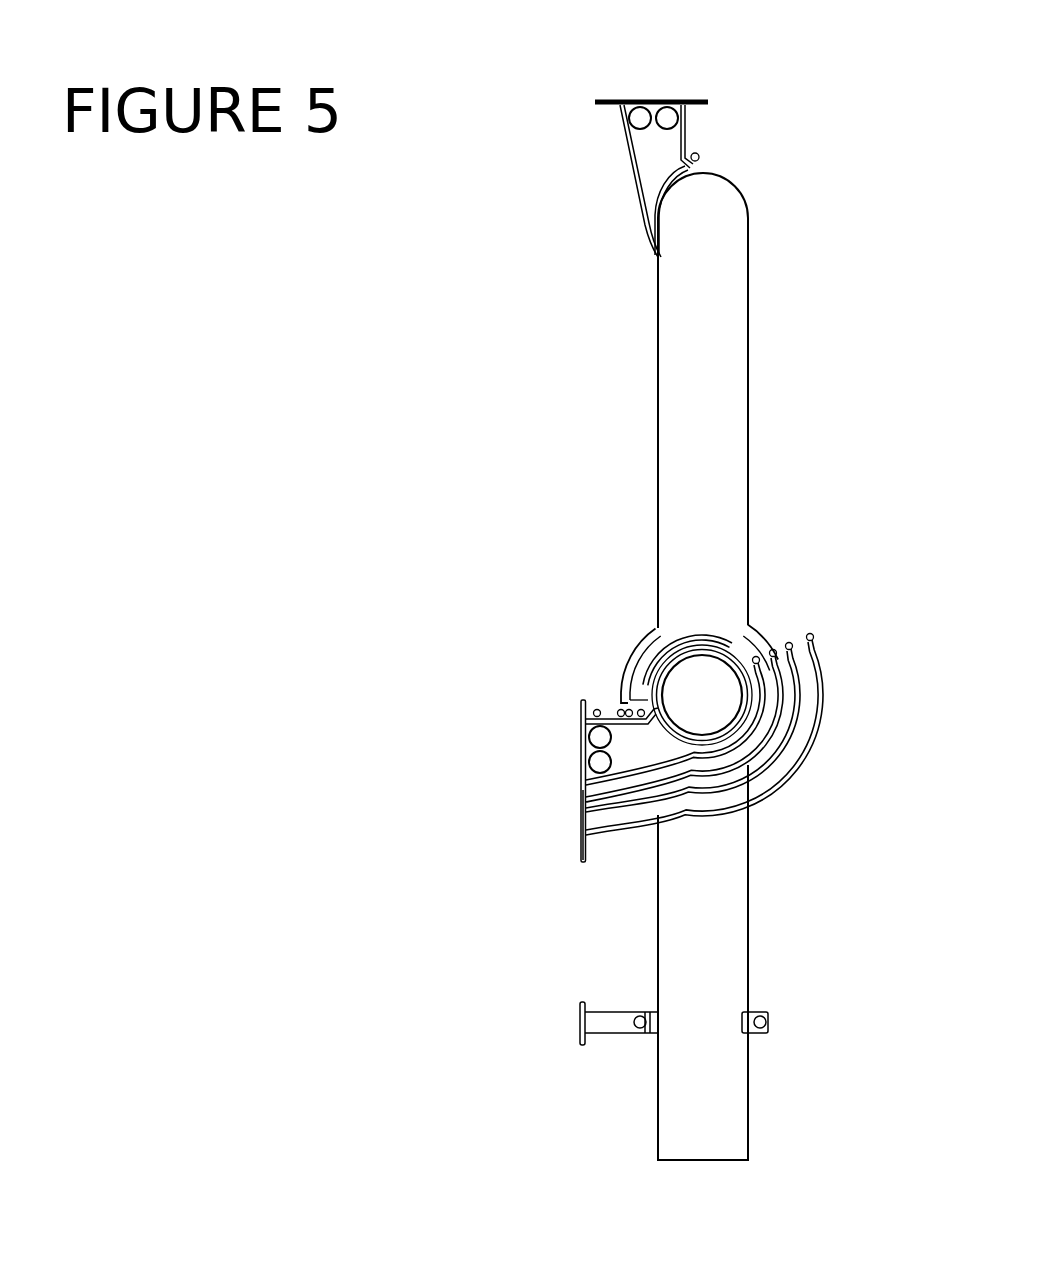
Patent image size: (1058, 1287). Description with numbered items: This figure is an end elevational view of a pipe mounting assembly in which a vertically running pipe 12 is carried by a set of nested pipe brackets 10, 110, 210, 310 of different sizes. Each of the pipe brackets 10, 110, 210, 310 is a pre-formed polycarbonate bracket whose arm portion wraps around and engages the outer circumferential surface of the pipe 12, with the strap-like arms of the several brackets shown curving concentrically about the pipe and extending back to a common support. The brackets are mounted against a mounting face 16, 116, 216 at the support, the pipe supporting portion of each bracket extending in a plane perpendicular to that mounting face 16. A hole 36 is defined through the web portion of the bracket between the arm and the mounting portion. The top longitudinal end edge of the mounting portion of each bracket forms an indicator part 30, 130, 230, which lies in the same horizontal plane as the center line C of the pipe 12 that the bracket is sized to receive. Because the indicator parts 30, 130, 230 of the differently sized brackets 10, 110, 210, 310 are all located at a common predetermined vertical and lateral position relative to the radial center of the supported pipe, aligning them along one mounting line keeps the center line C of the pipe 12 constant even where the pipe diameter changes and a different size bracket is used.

The pipe bracket 10 is at (596, 173).
The pipe 12 is at (750, 490).
The mounting face 16 is at (697, 78).
The hole 36 is at (575, 724).
The indicator part 30 is at (562, 672).
The indicator part 130 is at (763, 642).
The indicator part 230 is at (756, 653).
The mounting face 116 is at (600, 737).
The mounting face 216 is at (600, 762).
The pipe bracket 110 is at (583, 808).
The pipe bracket 210 is at (583, 832).
The pipe bracket 310 is at (628, 833).
The center line C is at (716, 710).